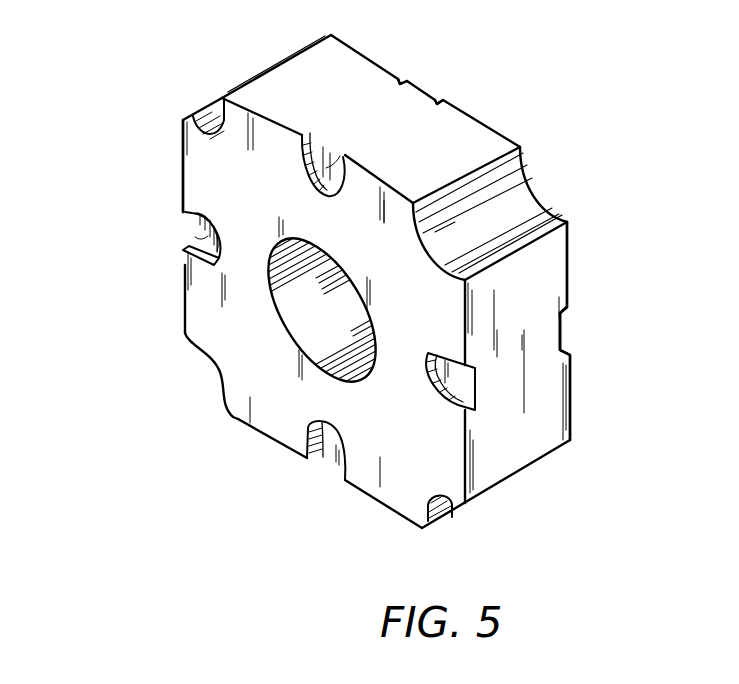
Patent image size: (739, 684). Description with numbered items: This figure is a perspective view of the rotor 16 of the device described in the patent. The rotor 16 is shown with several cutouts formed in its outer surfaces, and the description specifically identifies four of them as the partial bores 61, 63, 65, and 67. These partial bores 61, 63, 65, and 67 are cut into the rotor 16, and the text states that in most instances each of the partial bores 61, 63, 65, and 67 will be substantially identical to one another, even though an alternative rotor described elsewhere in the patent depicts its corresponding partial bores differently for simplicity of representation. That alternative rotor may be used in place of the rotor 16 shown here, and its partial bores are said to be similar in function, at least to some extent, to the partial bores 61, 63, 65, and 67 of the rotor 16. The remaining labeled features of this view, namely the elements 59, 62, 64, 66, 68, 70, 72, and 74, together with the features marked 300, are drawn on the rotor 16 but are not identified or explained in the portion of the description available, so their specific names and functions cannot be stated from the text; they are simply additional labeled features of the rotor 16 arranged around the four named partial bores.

The rotor 16 is at (125, 243).
The right side face 59 is at (497, 222).
The partial bore 61 is at (523, 210).
The oval through hole 62 is at (306, 318).
The partial bore 63 is at (210, 118).
The semicircular notch 64 is at (327, 163).
The partial bore 65 is at (441, 520).
The semicircular notch 66 is at (193, 233).
The partial bore 67 is at (225, 378).
The semicircular notch 68 is at (327, 450).
The semicircular notch 70 is at (457, 385).
The left side face 72 is at (193, 146).
The top face 74 is at (483, 120).
The alignment grooves 300 is at (362, 70).